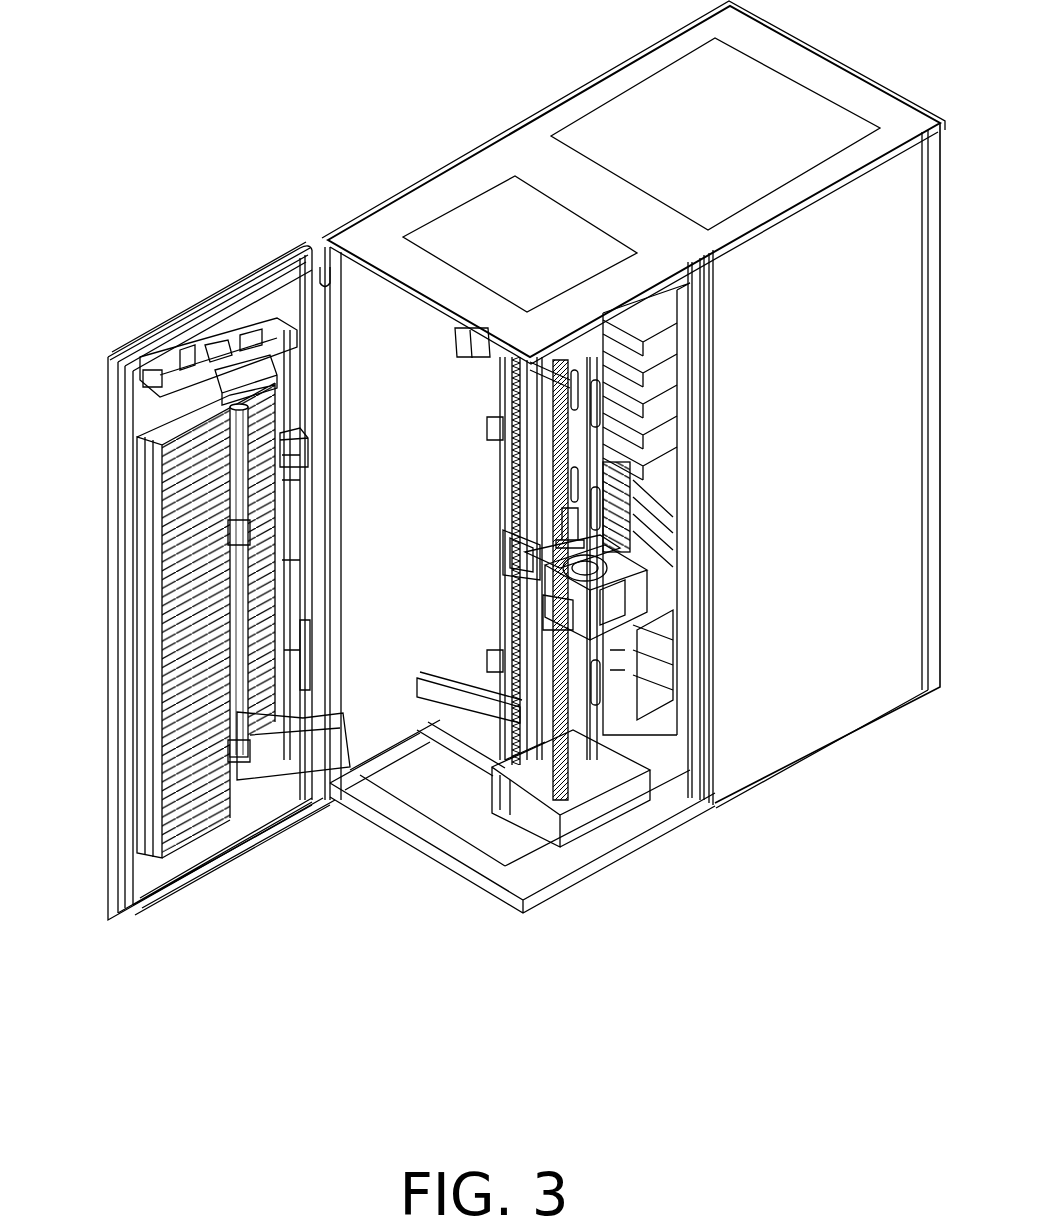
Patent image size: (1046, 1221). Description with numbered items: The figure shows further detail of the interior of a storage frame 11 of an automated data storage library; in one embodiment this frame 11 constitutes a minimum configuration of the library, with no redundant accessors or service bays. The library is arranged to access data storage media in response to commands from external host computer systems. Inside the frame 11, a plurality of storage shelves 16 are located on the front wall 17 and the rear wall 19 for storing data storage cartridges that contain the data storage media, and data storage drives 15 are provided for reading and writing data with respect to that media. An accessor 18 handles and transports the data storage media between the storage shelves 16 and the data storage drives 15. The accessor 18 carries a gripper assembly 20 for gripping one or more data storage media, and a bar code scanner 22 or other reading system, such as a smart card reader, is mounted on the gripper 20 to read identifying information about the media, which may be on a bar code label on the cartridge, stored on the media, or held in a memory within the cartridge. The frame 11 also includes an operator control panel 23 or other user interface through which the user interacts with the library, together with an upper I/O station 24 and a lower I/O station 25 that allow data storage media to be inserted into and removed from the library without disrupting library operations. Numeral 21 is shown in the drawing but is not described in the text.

The storage frame 11 is at (487, 505).
The data storage drives 15 is at (667, 353).
The storage shelves 16 is at (133, 716).
The front wall 17 is at (118, 550).
The accessor 18 is at (565, 820).
The rear wall 19 is at (505, 396).
The gripper assembly 20 is at (655, 600).
The door frame 21 is at (173, 323).
The bar code scanner 22 is at (540, 620).
The operator control panel 23 is at (307, 367).
The upper I/O station 24 is at (296, 406).
The lower I/O station 25 is at (277, 613).